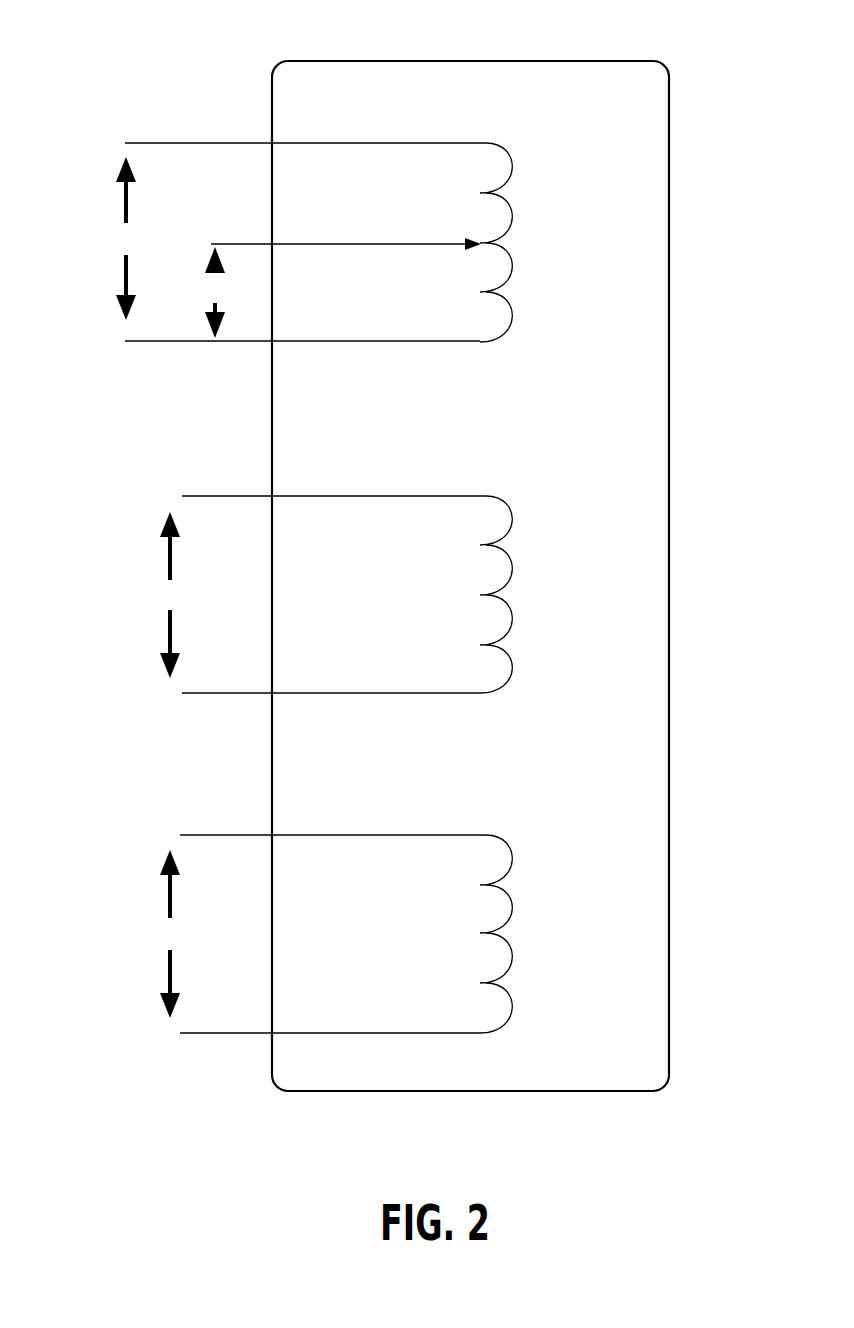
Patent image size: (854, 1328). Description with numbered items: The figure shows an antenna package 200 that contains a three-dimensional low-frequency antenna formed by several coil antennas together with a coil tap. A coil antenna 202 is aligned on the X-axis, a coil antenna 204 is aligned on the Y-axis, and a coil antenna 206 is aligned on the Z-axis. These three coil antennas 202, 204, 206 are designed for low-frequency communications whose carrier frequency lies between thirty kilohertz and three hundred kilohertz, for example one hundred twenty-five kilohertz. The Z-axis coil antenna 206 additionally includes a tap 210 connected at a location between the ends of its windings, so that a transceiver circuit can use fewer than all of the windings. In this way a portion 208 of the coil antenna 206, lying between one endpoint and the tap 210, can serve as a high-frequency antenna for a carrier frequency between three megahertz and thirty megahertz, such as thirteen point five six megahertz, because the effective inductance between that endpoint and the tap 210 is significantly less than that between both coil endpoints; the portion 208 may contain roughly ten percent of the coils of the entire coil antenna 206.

The antenna package 200 is at (699, 27).
The coil antenna 202 is at (526, 840).
The coil antenna 204 is at (527, 526).
The coil antenna 206 is at (141, 124).
The portion 208 is at (516, 286).
The tap 210 is at (247, 231).